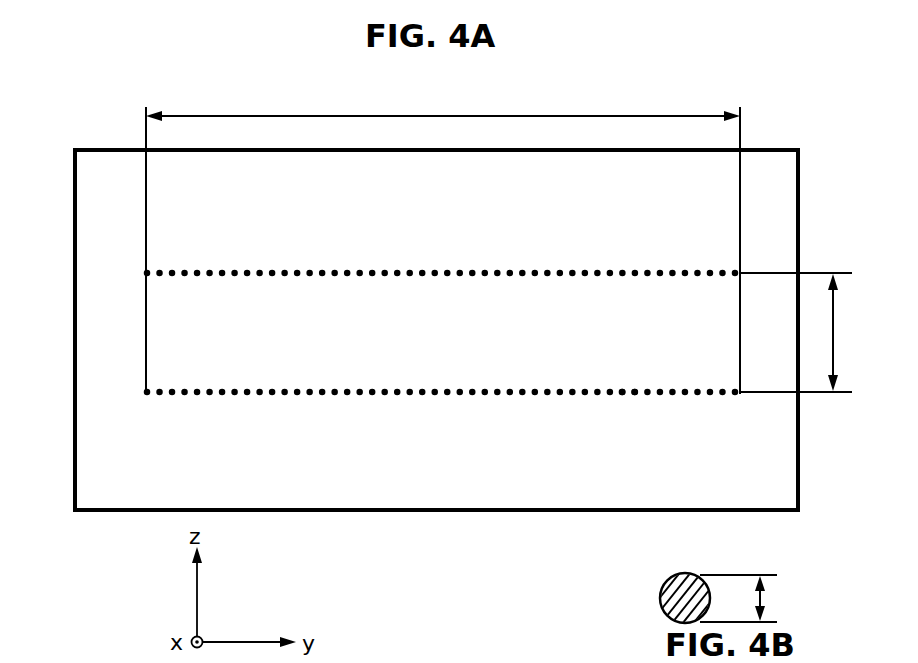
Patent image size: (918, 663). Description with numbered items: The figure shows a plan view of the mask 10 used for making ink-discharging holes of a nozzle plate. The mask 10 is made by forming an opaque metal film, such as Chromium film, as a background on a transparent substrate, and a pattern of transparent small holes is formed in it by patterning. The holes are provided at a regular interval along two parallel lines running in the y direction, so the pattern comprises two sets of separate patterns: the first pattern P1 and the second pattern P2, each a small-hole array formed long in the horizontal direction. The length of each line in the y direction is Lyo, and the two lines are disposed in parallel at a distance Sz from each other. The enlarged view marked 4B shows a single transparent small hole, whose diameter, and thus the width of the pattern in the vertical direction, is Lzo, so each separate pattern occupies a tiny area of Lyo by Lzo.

In FIG. 4A, the mask 10 is at (138, 490).
In FIG. 4A, the small hole cross-section location 4B is at (622, 390).
In FIG. 4A, the first pattern P1 is at (98, 273).
In FIG. 4A, the second pattern P2 is at (98, 391).
In FIG. 4A, the line length in y direction Lyo is at (443, 241).
In FIG. 4A, the distance between lines Sz is at (804, 332).
In FIG. 4B, the small hole diameter Lzo is at (751, 598).